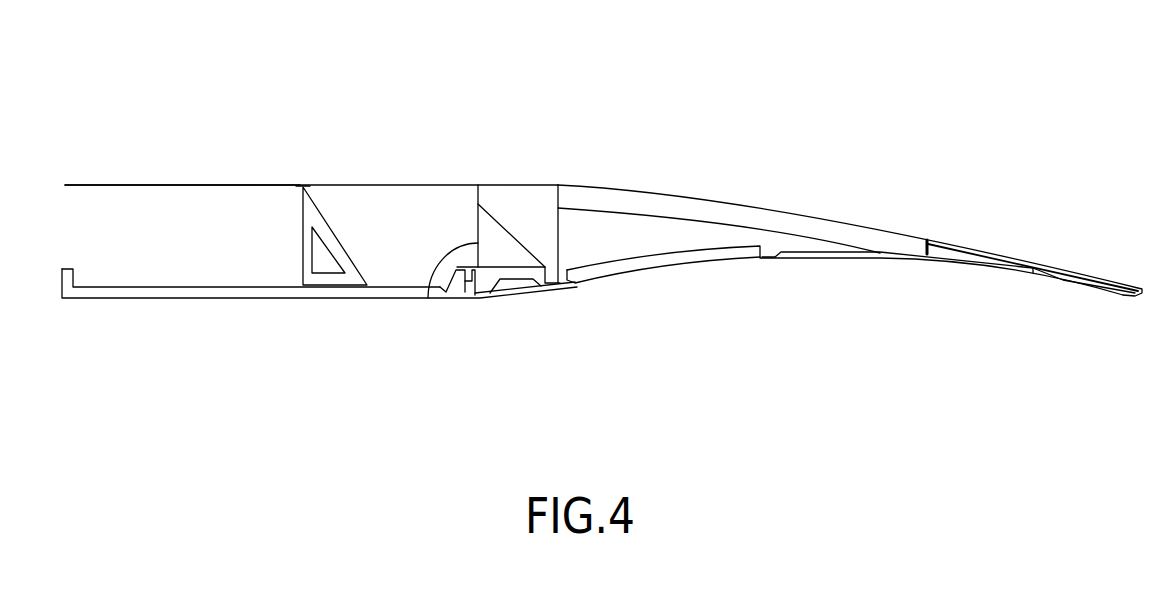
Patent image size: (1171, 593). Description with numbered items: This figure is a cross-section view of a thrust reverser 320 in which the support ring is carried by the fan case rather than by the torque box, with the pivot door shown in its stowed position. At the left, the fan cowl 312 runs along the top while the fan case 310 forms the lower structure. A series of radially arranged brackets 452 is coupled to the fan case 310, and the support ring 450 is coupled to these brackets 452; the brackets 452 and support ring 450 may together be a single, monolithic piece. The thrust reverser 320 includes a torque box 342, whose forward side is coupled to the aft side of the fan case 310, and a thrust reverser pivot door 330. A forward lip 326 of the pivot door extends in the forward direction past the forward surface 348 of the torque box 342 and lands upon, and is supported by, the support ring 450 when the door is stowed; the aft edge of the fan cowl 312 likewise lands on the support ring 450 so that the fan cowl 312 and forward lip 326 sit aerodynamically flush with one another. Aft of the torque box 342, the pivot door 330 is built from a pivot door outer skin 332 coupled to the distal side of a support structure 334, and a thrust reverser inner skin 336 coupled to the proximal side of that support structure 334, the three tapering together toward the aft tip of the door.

The thrust reverser 320 is at (966, 84).
The fan cowl 312 is at (211, 185).
The fan case 310 is at (258, 290).
The brackets 452 is at (335, 277).
The support ring 450 is at (301, 192).
The forward lip 326 is at (447, 185).
The forward surface 348 is at (440, 283).
The torque box 342 is at (512, 258).
The pivot door outer skin 332 is at (622, 188).
The thrust reverser pivot door 330 is at (723, 215).
The support structure 334 is at (792, 222).
The thrust reverser inner skin 336 is at (993, 270).